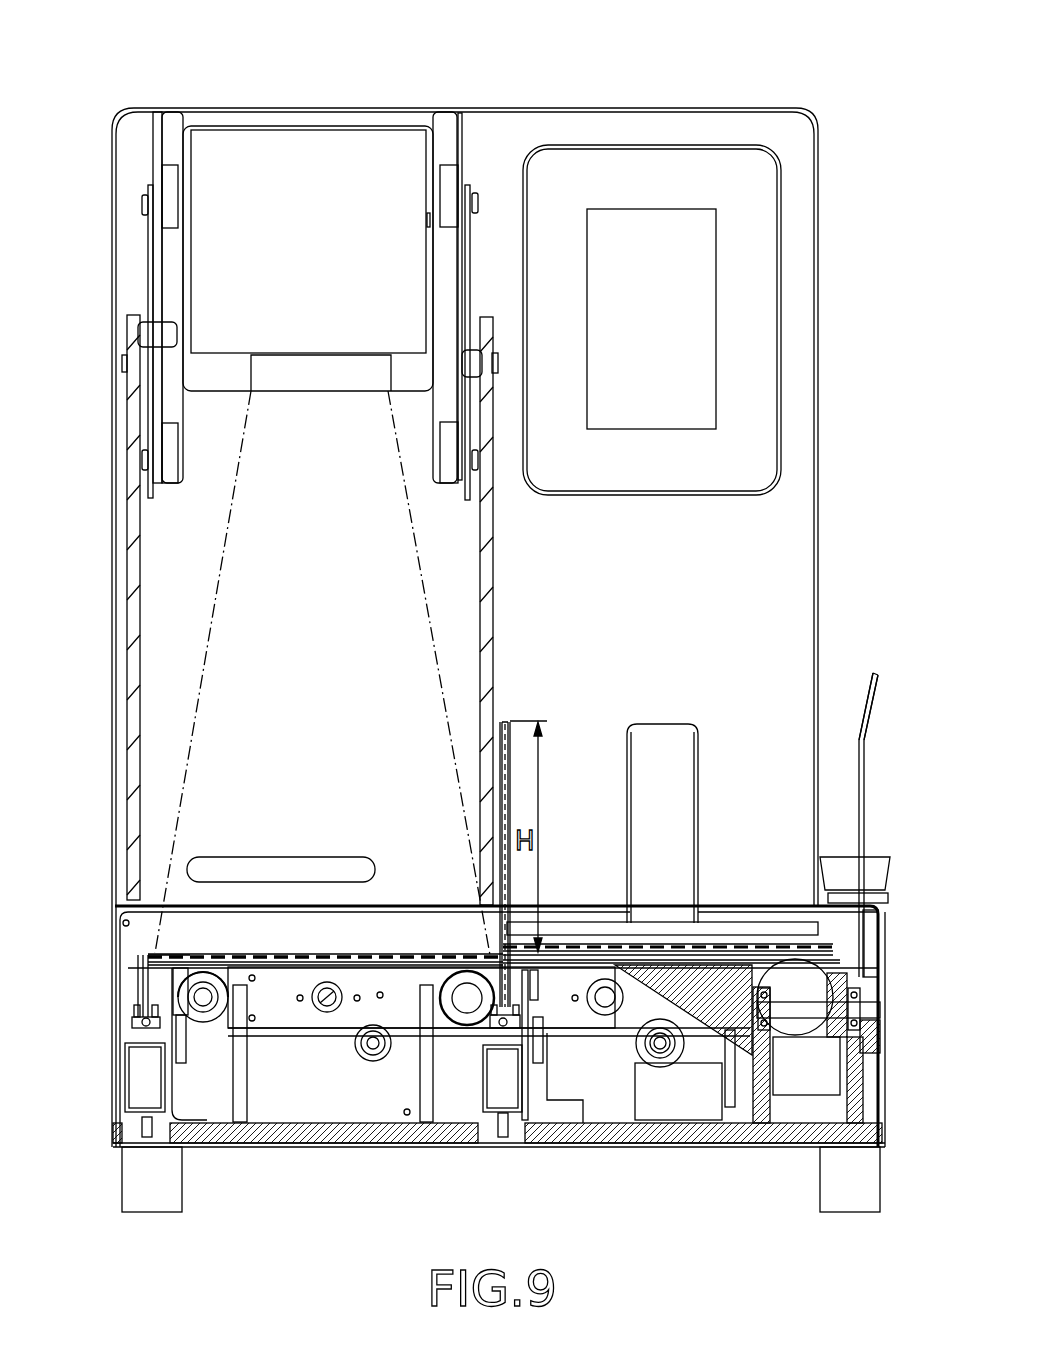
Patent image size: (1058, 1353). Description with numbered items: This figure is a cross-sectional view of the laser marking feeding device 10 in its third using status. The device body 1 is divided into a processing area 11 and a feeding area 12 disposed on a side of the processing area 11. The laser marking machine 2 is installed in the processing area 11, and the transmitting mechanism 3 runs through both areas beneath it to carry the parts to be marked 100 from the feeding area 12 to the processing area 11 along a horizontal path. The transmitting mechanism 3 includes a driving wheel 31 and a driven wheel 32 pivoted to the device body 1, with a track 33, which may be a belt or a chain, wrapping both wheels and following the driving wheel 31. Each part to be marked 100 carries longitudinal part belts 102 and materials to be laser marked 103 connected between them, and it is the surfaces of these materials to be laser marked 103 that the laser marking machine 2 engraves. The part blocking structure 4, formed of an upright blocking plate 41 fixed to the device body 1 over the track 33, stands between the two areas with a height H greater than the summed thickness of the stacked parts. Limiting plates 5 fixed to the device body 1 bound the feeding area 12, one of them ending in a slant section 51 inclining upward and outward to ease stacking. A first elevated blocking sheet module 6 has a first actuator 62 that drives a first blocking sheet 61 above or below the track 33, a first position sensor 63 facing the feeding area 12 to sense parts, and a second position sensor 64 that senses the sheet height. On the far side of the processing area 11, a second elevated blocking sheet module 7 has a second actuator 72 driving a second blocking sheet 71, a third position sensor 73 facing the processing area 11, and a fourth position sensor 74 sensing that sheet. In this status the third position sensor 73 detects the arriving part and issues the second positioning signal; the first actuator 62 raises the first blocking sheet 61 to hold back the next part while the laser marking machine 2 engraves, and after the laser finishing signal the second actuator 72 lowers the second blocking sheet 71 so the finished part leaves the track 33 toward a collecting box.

The device body 1 is at (694, 1148).
The laser marking machine 2 is at (265, 140).
The transmitting mechanism 3 is at (223, 948).
The part blocking structure 4 is at (498, 720).
The upright blocking plate 41 is at (507, 762).
The limiting plate 5 is at (665, 742).
The slant section 51 is at (873, 710).
The first elevated blocking sheet module 6 is at (482, 1073).
The first blocking sheet 61 is at (503, 960).
The first actuator 62 is at (500, 1078).
The first position sensor 63 is at (538, 970).
The second position sensor 64 is at (498, 1022).
The second elevated blocking sheet module 7 is at (239, 1053).
The second blocking sheet 71 is at (135, 958).
The second actuator 72 is at (137, 1080).
The third position sensor 73 is at (182, 983).
The fourth position sensor 74 is at (133, 1021).
The laser marking feeding device 10 is at (447, 21).
The processing area 11 is at (270, 945).
The feeding area 12 is at (566, 940).
The driving wheel 31 is at (808, 987).
The driven wheel 32 is at (187, 955).
The track 33 is at (197, 953).
The part to be marked 100 is at (324, 950).
The longitudinal part belt 102 is at (360, 952).
The material to be laser marked 103 is at (392, 950).